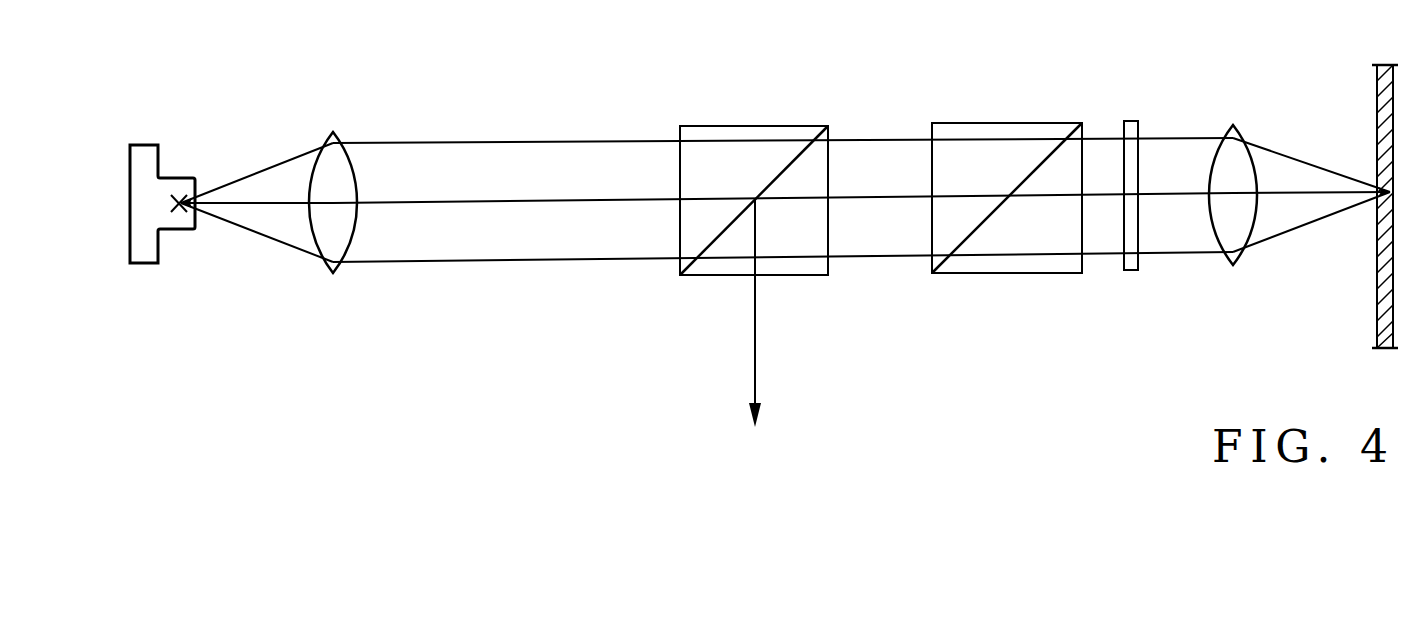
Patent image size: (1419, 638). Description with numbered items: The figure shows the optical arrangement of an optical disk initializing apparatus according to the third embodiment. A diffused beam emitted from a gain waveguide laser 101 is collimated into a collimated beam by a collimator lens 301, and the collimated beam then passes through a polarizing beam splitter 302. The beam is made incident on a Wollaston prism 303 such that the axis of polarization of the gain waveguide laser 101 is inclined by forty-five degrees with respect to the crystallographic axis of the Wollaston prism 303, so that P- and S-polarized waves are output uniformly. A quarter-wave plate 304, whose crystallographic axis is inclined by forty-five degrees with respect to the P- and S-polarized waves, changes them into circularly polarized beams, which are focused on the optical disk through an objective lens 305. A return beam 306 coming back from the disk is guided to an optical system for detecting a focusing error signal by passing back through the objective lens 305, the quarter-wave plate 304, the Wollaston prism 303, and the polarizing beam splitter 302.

The gain waveguide laser 101 is at (145, 145).
The collimator lens 301 is at (334, 133).
The polarizing beam splitter 302 is at (812, 142).
The Wollaston prism 303 is at (989, 123).
The λ/4 plate 304 is at (1130, 271).
The objective lens 305 is at (1229, 127).
The return beam 306 is at (755, 343).